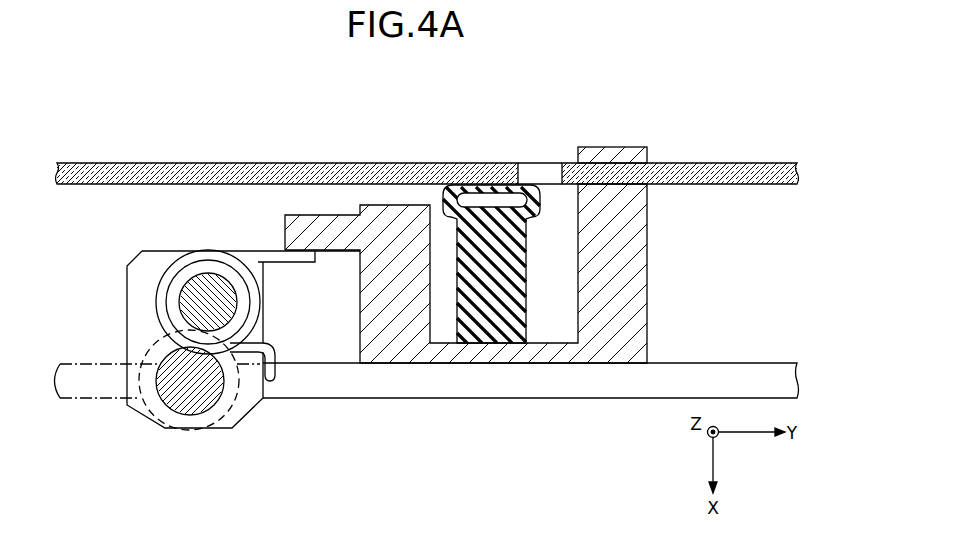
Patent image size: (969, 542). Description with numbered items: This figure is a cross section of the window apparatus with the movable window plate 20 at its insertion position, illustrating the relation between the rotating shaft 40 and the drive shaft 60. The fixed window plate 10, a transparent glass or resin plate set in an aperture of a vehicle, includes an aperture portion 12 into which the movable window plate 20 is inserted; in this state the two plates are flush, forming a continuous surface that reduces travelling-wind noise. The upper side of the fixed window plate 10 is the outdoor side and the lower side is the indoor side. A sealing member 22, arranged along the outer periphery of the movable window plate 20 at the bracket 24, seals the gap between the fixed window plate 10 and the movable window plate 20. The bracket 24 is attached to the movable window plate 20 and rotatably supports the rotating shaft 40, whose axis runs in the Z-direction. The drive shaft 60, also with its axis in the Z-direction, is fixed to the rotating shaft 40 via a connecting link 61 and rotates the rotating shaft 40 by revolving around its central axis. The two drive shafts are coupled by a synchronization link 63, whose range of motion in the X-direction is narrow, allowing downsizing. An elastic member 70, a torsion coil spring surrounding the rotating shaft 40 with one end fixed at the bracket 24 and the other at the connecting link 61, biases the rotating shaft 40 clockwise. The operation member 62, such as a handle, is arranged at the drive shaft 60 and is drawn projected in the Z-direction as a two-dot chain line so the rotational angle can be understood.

The fixed window plate 10 is at (283, 168).
The movable window plate 20 is at (712, 162).
The aperture portion 12 is at (538, 168).
The sealing member 22 is at (445, 198).
The bracket 24 is at (641, 257).
The elastic member 70 is at (162, 290).
The rotating shaft 40 is at (208, 287).
The drive shaft 60 is at (187, 395).
The connecting link 61 is at (248, 415).
The operation member 62 is at (90, 400).
The synchronization link 63 is at (363, 388).